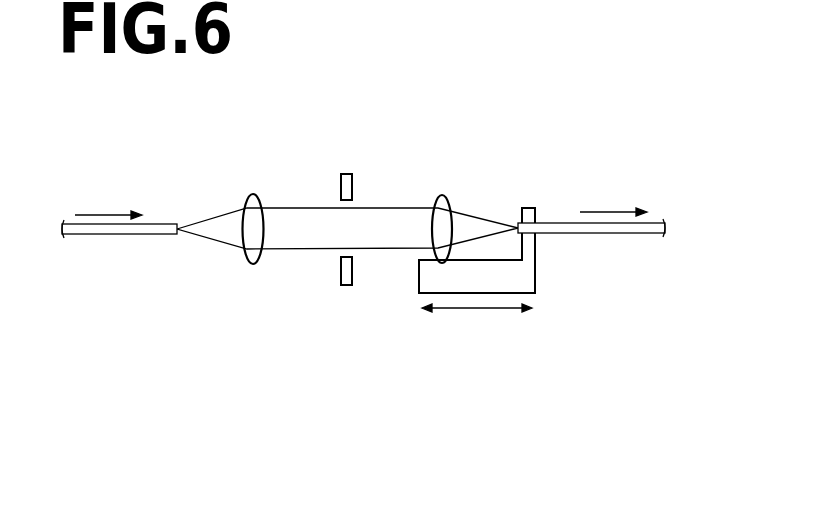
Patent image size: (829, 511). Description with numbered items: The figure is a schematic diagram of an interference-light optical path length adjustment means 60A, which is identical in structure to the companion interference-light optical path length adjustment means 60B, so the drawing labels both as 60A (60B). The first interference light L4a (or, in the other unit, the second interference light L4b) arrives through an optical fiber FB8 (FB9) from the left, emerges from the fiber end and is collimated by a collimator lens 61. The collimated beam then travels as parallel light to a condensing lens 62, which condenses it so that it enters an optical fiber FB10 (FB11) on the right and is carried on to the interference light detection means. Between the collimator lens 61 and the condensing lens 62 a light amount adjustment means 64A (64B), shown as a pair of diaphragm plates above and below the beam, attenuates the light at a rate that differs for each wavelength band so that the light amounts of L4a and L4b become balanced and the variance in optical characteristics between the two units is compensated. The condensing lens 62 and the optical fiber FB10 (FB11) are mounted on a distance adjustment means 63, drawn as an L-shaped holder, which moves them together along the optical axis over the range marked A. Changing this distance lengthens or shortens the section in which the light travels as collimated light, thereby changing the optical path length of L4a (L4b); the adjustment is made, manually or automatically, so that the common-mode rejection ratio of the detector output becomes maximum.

The interference-light optical path length adjustment means 60A is at (380, 176).
The interference-light optical path length adjustment means 60B is at (409, 64).
The collimator lens 61 is at (251, 195).
The condensing lens 62 is at (441, 195).
The distance adjustment means 63 is at (526, 282).
The light amount adjustment means 64A is at (402, 194).
The light amount adjustment means 64B is at (347, 174).
The optical fiber FB8 is at (119, 270).
The optical fiber FB9 is at (108, 240).
The optical fiber FB10 is at (591, 269).
The optical fiber FB11 is at (613, 239).
The first interference light L4a is at (365, 200).
The second interference light L4b is at (365, 200).
The movable distance A is at (477, 323).